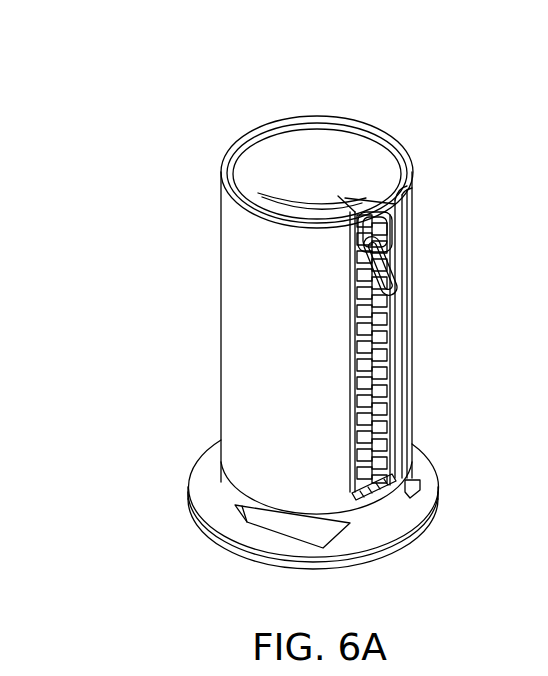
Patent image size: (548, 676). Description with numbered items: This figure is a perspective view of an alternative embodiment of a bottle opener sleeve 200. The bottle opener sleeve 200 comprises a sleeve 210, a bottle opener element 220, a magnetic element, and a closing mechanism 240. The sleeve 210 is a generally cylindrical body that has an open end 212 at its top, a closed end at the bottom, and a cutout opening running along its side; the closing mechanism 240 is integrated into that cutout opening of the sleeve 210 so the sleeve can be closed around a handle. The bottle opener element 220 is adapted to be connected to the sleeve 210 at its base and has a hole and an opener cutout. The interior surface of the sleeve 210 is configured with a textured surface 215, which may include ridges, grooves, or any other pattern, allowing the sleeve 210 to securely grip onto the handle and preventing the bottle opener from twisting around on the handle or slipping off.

The bottle opener sleeve 200 is at (172, 106).
The sleeve 210 is at (220, 340).
The open end 212 is at (392, 138).
The textured surface 215 is at (298, 196).
The bottle opener element 220 is at (200, 528).
The closing mechanism 240 is at (386, 352).